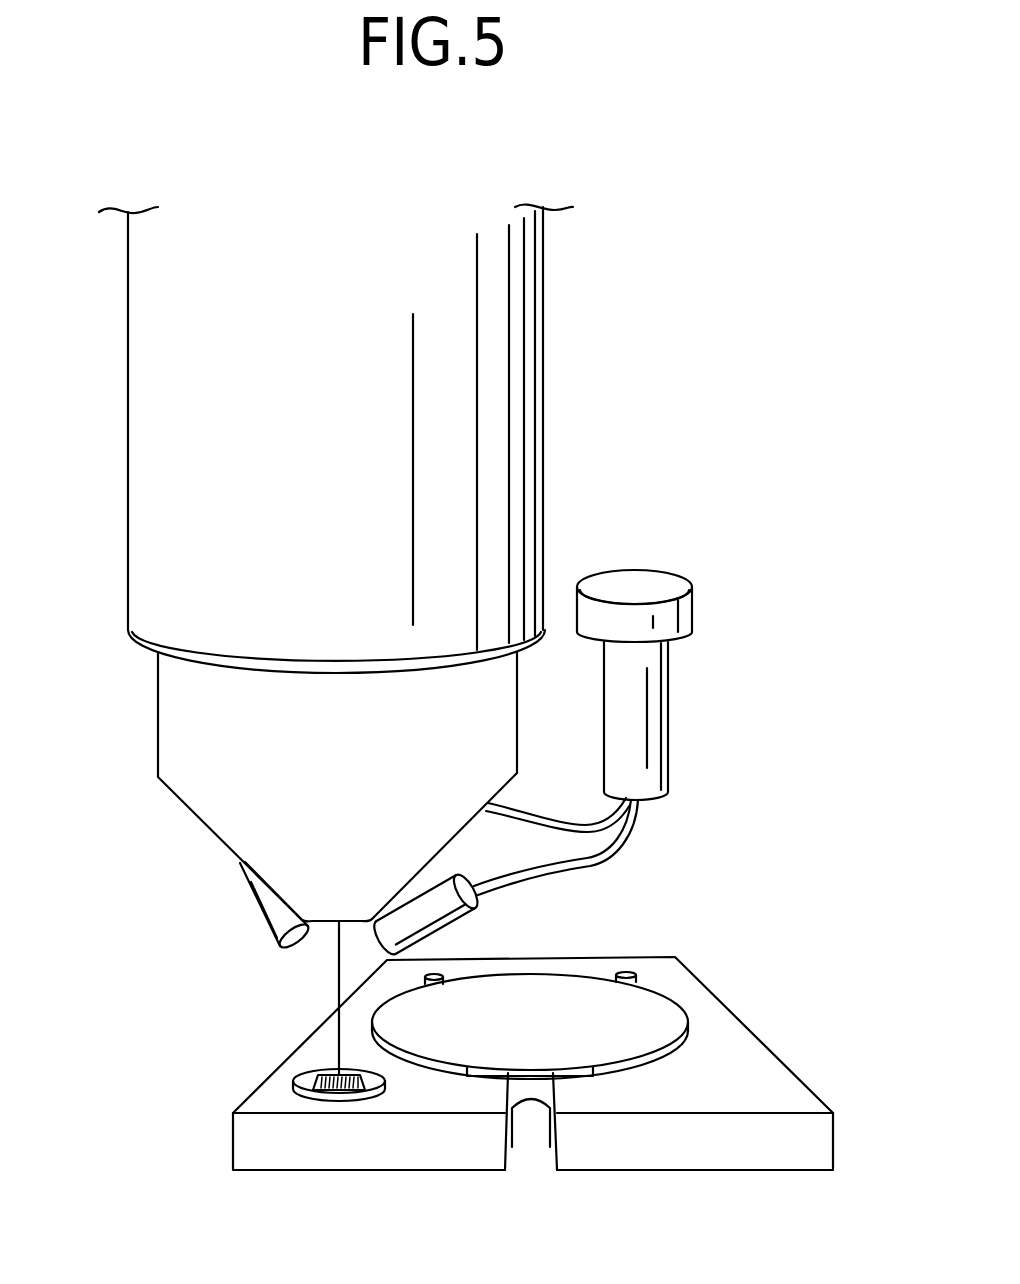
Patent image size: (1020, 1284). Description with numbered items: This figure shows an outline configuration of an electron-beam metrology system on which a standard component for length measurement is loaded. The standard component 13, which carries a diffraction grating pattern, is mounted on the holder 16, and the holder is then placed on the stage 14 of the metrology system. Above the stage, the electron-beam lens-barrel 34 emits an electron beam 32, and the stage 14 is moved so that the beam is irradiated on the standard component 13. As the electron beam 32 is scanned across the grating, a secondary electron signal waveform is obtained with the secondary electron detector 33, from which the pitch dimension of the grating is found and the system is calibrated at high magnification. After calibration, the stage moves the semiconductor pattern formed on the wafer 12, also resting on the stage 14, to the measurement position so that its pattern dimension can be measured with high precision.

The wafer 12 is at (660, 1018).
The standard component 13 is at (318, 1075).
The stage 14 is at (757, 1065).
The holder 16 is at (293, 1093).
The electron beam 32 is at (338, 983).
The secondary electron detector 33 is at (473, 916).
The electron-beam lens-barrel 34 is at (168, 520).